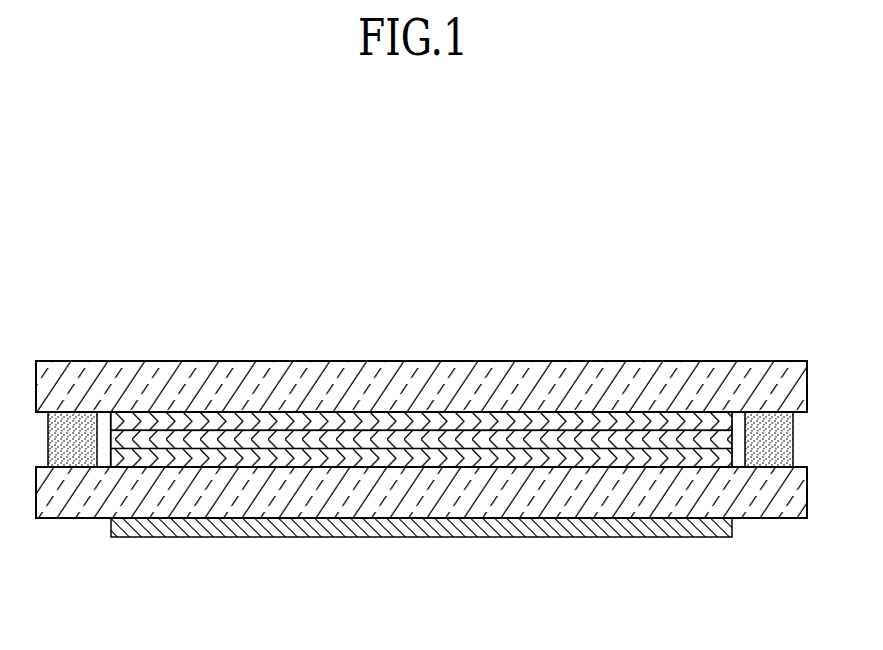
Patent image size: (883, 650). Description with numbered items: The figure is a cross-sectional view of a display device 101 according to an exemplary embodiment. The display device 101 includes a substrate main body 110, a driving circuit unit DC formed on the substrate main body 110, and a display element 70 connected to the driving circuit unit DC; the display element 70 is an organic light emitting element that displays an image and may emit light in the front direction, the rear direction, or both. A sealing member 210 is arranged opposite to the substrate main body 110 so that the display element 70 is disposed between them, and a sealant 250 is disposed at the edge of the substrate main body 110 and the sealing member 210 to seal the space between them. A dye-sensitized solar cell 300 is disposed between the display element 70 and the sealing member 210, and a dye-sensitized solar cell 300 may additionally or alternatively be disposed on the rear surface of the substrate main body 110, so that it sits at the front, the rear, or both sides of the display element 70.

The display device 101 is at (417, 289).
The sealing member 210 is at (600, 380).
The substrate main body 110 is at (567, 500).
The sealant 250 is at (793, 436).
The dye-sensitized solar cell 300 is at (397, 420).
The display element 70 is at (272, 437).
The driving circuit unit DC is at (196, 458).